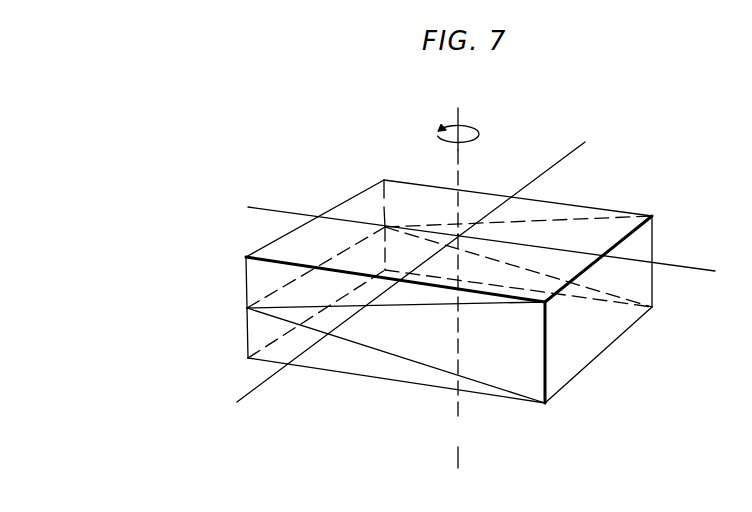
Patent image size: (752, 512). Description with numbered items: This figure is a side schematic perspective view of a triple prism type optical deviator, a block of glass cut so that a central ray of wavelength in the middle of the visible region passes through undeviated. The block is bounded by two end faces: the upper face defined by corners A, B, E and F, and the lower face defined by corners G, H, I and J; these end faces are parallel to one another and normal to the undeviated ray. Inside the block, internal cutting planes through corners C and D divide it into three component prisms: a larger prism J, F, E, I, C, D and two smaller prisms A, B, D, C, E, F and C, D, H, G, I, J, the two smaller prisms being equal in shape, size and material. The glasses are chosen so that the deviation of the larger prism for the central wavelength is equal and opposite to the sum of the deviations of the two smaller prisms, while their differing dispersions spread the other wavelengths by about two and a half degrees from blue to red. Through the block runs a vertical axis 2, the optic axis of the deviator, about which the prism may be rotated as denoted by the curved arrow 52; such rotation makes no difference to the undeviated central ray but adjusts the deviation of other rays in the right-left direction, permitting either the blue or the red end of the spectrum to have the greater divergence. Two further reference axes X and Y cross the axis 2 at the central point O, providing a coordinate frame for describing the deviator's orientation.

The axis of rotation 2 is at (464, 284).
The arrow 52 is at (438, 136).
The vertex A is at (306, 244).
The vertex B is at (515, 193).
The vertex C is at (387, 328).
The vertex D is at (449, 257).
The vertex E is at (606, 254).
The vertex F is at (395, 330).
The vertex G is at (388, 336).
The vertex H is at (511, 280).
The vertex I is at (524, 315).
The vertex J is at (399, 365).
The X axis X is at (481, 241).
The Y axis Y is at (408, 272).
The origin O is at (462, 243).